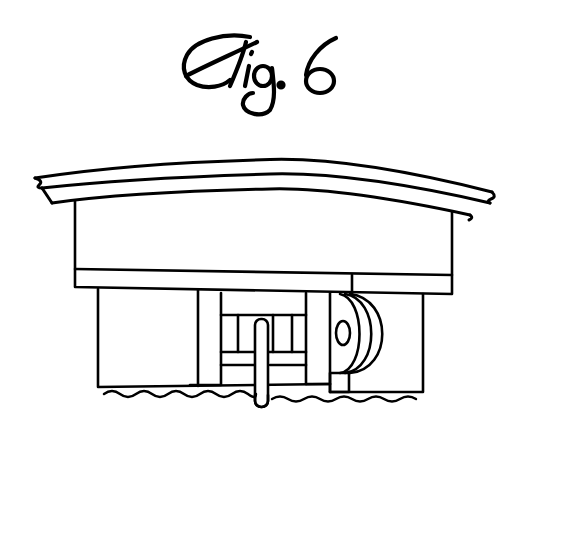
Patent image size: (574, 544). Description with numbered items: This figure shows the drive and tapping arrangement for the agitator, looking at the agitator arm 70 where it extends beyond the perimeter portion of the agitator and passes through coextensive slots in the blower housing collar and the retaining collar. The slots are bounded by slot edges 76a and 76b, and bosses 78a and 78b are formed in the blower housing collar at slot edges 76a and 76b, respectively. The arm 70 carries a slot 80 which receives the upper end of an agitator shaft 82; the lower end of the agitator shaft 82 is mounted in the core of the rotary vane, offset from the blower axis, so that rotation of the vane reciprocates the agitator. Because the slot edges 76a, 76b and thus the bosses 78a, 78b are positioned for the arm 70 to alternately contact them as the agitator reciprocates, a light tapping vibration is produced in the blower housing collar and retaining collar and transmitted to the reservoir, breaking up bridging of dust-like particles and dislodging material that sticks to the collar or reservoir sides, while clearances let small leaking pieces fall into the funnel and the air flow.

The arm 70 is at (277, 367).
The slot edge 76a is at (283, 386).
The slot edge 76b is at (235, 372).
The boss 78a is at (314, 376).
The boss 78b is at (205, 380).
The slot 80 is at (261, 318).
The agitator shaft 82 is at (265, 408).